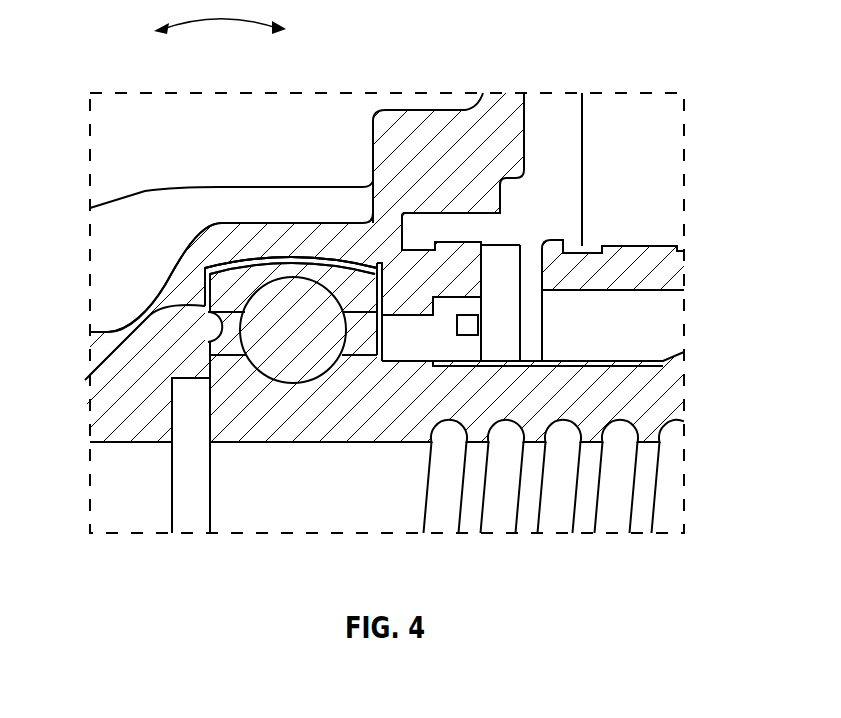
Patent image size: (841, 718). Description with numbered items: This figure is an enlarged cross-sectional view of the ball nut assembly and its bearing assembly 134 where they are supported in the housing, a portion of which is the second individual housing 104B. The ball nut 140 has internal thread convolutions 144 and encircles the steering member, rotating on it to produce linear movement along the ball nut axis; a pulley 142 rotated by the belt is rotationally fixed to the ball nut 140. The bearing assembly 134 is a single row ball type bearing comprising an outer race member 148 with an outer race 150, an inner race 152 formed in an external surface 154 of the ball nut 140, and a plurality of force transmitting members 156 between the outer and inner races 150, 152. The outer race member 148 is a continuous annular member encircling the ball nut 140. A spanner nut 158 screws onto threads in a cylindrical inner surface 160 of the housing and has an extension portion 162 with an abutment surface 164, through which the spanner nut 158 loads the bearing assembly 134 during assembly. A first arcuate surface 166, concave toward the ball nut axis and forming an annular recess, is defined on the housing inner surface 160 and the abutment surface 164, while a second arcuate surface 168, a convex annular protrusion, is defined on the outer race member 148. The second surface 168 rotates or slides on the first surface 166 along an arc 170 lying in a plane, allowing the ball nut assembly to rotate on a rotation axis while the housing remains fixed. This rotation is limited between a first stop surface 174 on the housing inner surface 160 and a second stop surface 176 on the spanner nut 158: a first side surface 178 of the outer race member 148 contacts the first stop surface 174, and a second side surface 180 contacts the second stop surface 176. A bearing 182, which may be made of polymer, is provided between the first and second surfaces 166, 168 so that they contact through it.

The second individual housing 104B is at (197, 242).
The bearing assembly 134 is at (203, 248).
The ball nut 140 is at (674, 395).
The pulley 142 is at (665, 246).
The internal thread convolutions 144 is at (610, 520).
The outer race member 148 is at (237, 275).
The outer race 150 is at (327, 262).
The inner race 152 is at (268, 335).
The external surface 154 is at (372, 357).
The force transmitting members 156 is at (176, 384).
The spanner nut 158 is at (483, 271).
The cylindrical inner surface 160 is at (460, 218).
The extension portion 162 is at (378, 251).
The abutment surface 164 is at (352, 187).
The first arcuate surface 166 is at (232, 278).
The second arcuate surface 168 is at (372, 333).
The arc 170 is at (221, 23).
The first stop surface 174 is at (95, 372).
The second stop surface 176 is at (385, 302).
The first side surface 178 is at (204, 293).
The second side surface 180 is at (447, 243).
The bearing 182 is at (243, 275).